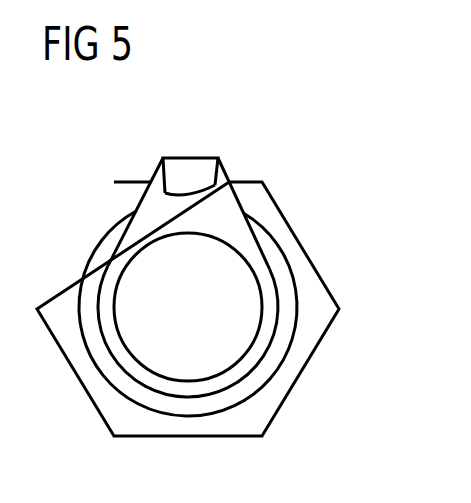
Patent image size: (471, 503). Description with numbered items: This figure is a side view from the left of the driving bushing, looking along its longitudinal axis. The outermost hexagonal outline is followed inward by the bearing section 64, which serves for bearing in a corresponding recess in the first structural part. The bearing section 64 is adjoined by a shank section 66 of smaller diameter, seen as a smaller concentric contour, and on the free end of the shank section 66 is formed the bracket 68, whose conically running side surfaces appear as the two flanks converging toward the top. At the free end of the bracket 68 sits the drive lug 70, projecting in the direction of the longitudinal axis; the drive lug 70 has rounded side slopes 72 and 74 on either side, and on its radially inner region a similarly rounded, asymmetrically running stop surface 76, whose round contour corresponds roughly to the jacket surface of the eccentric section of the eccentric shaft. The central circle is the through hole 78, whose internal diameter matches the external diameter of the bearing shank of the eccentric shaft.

The bearing section 64 is at (287, 330).
The shank section 66 is at (259, 304).
The bracket 68 is at (148, 210).
The drive lug 70 is at (190, 168).
The rounded side slope 72 is at (156, 163).
The rounded side slope 74 is at (224, 164).
The stop surface 76 is at (182, 194).
The through hole 78 is at (122, 311).